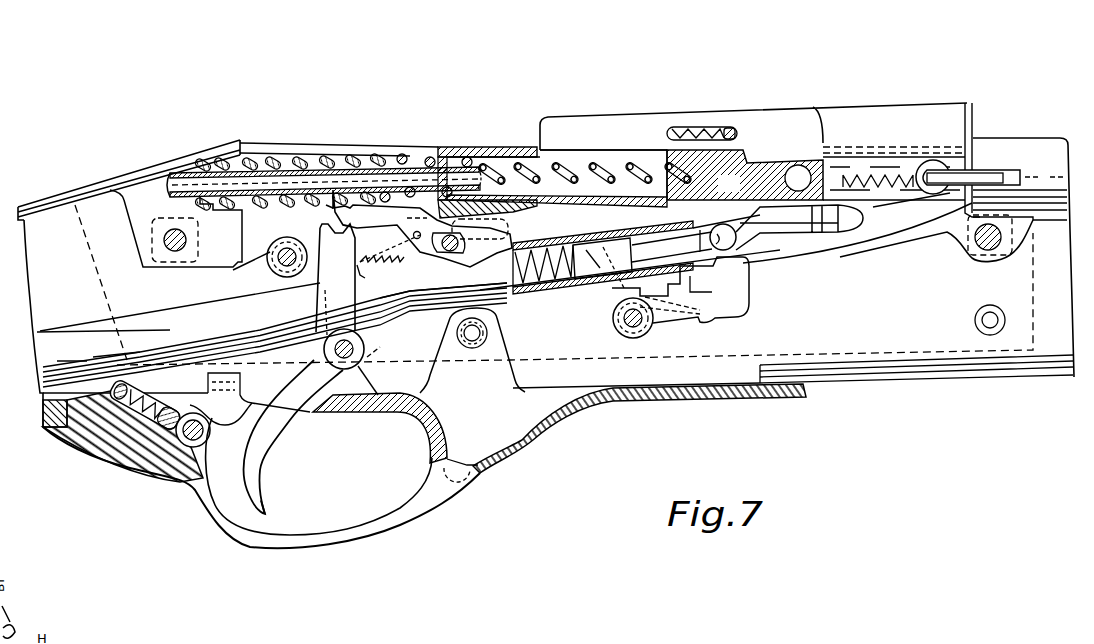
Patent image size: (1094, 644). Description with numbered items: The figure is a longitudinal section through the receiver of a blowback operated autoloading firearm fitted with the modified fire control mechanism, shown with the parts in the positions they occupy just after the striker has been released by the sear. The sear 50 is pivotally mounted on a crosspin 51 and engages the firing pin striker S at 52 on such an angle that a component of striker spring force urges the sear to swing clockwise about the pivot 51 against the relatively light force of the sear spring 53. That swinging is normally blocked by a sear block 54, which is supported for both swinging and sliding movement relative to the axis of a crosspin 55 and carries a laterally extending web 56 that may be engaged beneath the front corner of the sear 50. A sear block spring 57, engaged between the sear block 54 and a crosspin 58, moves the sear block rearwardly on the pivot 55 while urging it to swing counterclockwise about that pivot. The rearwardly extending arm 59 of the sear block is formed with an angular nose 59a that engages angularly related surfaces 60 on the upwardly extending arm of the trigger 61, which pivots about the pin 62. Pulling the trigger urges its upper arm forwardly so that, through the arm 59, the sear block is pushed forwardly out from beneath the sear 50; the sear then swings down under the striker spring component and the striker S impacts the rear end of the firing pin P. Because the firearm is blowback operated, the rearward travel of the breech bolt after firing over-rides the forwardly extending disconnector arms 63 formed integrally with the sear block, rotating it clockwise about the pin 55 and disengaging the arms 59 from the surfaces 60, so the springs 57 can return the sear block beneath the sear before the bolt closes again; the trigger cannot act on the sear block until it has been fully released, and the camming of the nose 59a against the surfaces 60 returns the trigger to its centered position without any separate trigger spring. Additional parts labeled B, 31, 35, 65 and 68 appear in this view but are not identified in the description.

The firing pin striker S is at (460, 147).
The firing pin P is at (753, 128).
The breech block B is at (745, 175).
The firing pin rod 31 is at (715, 243).
The bracket 35 is at (676, 292).
The sear 50 is at (320, 238).
The crosspin 51 is at (280, 244).
The engagement point 52 is at (523, 213).
The sear spring 53 is at (335, 279).
The sear block 54 is at (507, 286).
The crosspin 55 is at (450, 252).
The laterally extending web 56 is at (475, 236).
The sear block spring 57 is at (390, 258).
The crosspin 58 is at (362, 276).
The rearwardly extending arm 59 is at (422, 228).
The angular nose 59a is at (351, 222).
The angularly related surfaces 60 is at (332, 218).
The trigger 61 is at (292, 418).
The pin 62 is at (356, 350).
The disconnector arms 63 is at (548, 238).
The trigger guard 65 is at (196, 522).
The stop block 68 is at (240, 378).